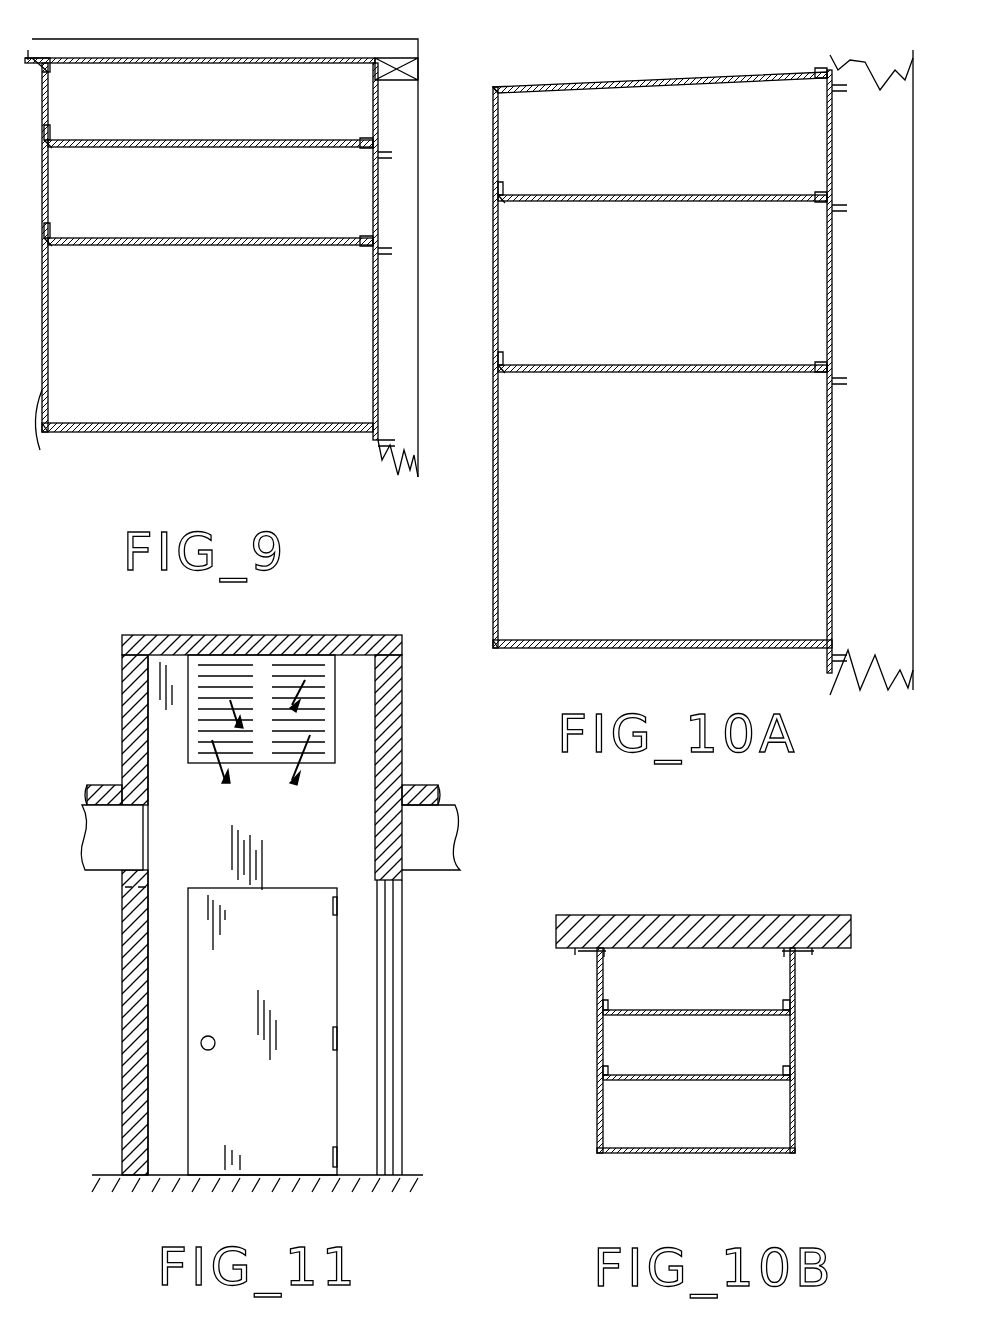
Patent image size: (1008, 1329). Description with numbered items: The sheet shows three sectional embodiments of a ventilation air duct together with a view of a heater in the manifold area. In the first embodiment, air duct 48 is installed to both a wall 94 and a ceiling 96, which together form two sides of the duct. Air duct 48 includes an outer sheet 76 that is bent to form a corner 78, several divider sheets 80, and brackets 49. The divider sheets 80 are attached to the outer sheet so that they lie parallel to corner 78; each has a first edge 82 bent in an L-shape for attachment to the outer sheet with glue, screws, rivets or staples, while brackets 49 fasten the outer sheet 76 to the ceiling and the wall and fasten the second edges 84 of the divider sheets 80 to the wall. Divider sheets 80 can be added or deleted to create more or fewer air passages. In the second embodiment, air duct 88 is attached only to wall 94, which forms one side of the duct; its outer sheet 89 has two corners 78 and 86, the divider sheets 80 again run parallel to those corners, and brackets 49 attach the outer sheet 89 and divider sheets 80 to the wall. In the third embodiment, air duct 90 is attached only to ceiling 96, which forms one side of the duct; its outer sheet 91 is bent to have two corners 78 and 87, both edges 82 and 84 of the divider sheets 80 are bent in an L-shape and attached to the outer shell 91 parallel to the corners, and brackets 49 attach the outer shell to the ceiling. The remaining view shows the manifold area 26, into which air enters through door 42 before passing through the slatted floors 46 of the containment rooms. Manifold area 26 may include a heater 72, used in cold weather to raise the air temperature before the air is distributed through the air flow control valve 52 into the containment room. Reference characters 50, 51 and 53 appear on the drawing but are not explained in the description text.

In FIG. 11, the manifold area 26 is at (150, 1100).
In FIG. 11, the door 42 is at (395, 1013).
In FIG. 11, the slatted floors 46 is at (265, 1175).
In FIG. 9, the air duct 48 is at (142, 432).
In FIG. 11, the air duct 48 is at (100, 870).
In FIG. 9, the brackets 49 is at (70, 70).
In FIG. 10A, the brackets 49 is at (818, 72).
In FIG. 10B, the brackets 49 is at (583, 955).
In FIG. 9, the top panel 50 is at (142, 90).
In FIG. 10A, the top panel 50 is at (615, 108).
In FIG. 10B, the top panel 50 is at (795, 985).
In FIG. 9, the side panel 51 is at (150, 205).
In FIG. 10A, the side panel 51 is at (795, 285).
In FIG. 10B, the side panel 51 is at (795, 1050).
In FIG. 11, the air flow control valve 52 is at (150, 840).
In FIG. 9, the side panel 53 is at (230, 382).
In FIG. 10A, the side panel 53 is at (785, 520).
In FIG. 10B, the side panel 53 is at (795, 1117).
In FIG. 11, the heater 72 is at (265, 763).
In FIG. 9, the outer sheet 76 is at (51, 434).
In FIG. 9, the corner 78 is at (52, 423).
In FIG. 10A, the corner 78 is at (505, 640).
In FIG. 9, the divider sheets 80 is at (222, 140).
In FIG. 10A, the divider sheets 80 is at (672, 195).
In FIG. 10B, the divider sheets 80 is at (710, 1010).
In FIG. 9, the first edge 82 is at (50, 148).
In FIG. 10A, the first edge 82 is at (503, 203).
In FIG. 10B, the first edge 82 is at (606, 1016).
In FIG. 9, the second edges 84 is at (358, 140).
In FIG. 10A, the second edges 84 is at (812, 193).
In FIG. 10B, the second edges 84 is at (787, 1011).
In FIG. 10A, the corner 86 is at (500, 95).
In FIG. 10B, the corner 87 is at (795, 1153).
In FIG. 10A, the air duct 88 is at (537, 662).
In FIG. 10A, the outer sheet 89 is at (493, 597).
In FIG. 10B, the air duct 90 is at (646, 1160).
In FIG. 10B, the outer sheet 91 is at (595, 1127).
In FIG. 9, the wall 94 is at (405, 318).
In FIG. 10A, the wall 94 is at (445, 320).
In FIG. 9, the ceiling 96 is at (248, 52).
In FIG. 10B, the ceiling 96 is at (741, 915).